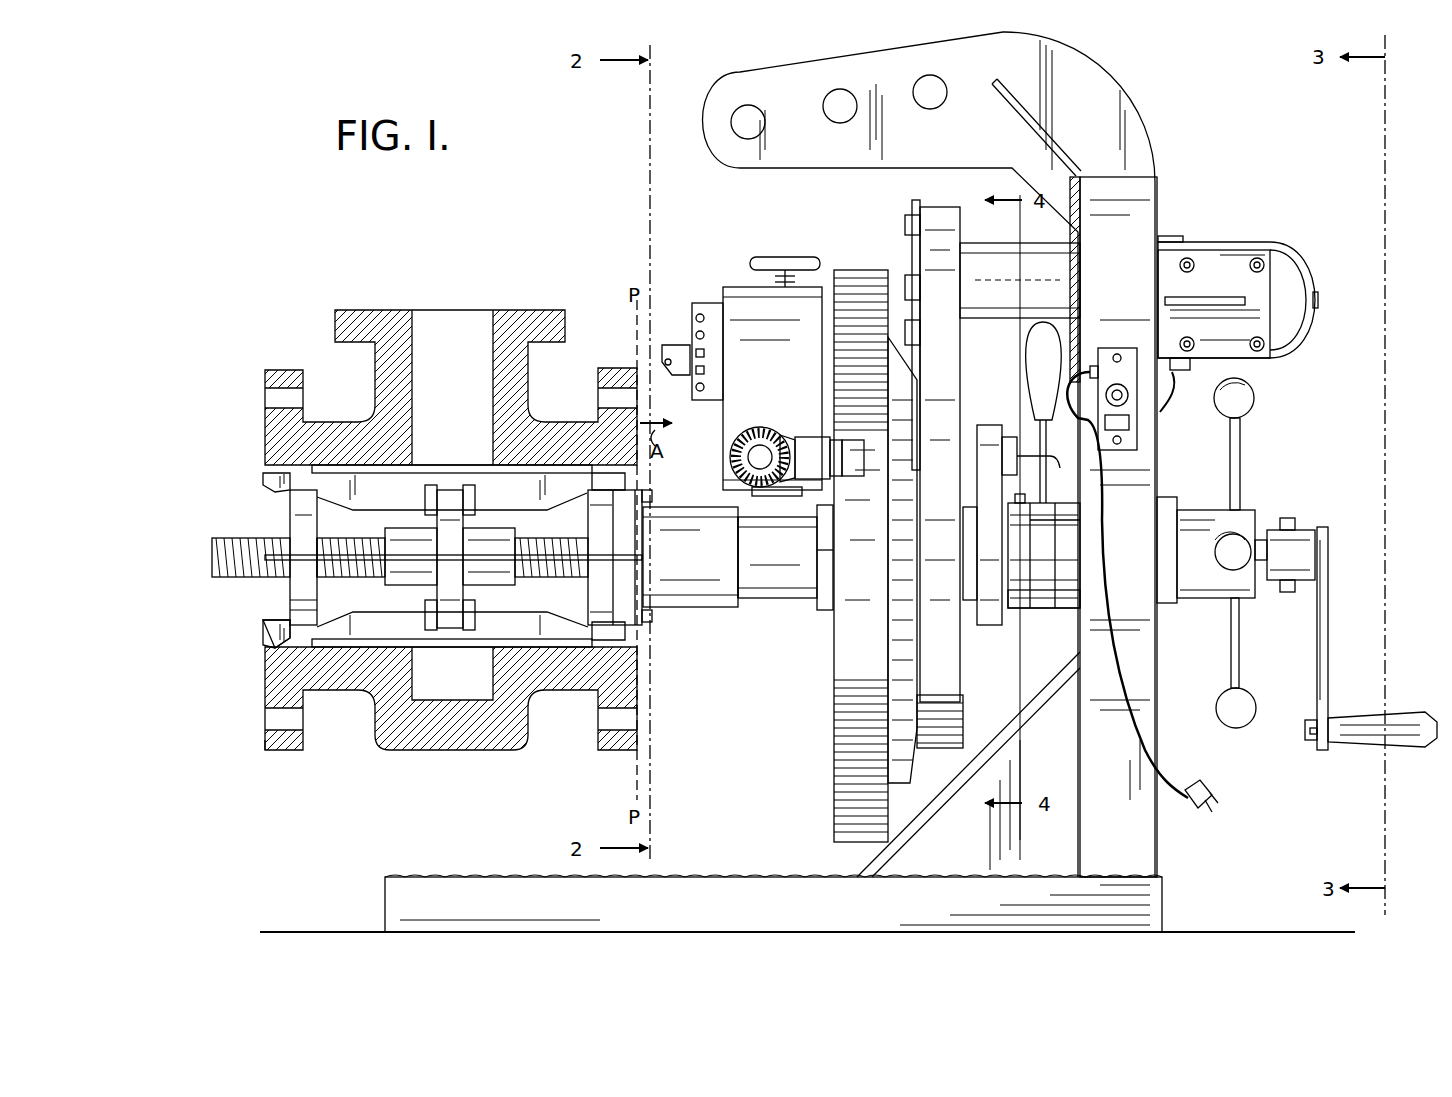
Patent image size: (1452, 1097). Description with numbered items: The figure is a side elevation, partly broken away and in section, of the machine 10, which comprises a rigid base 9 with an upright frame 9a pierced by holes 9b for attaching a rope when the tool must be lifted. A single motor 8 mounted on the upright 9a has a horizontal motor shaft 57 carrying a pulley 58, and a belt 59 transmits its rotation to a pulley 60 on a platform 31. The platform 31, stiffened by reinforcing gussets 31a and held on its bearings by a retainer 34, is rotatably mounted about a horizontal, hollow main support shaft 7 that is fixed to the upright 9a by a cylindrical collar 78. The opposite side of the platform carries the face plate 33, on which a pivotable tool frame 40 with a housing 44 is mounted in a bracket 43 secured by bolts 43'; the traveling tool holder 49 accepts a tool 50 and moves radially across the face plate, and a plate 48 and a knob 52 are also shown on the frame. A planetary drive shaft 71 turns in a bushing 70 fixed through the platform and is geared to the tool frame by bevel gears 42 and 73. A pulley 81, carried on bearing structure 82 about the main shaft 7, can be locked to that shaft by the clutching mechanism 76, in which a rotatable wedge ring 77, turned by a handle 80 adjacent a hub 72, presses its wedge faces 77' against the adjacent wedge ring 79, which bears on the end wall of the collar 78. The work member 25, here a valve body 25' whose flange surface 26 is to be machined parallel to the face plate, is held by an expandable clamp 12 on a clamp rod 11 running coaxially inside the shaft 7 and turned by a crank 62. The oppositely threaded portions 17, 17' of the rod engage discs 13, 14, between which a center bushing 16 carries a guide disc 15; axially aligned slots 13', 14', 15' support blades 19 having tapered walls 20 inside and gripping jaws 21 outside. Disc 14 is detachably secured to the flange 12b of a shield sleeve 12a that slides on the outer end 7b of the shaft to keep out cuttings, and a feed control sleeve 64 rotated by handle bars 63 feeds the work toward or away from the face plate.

The main support shaft 7 is at (777, 577).
The outer end of hollow shaft 7b is at (790, 606).
The motor 8 is at (1290, 255).
The stand or base 9 is at (1165, 890).
The upright frame 9a is at (1143, 192).
The holes 9b is at (840, 106).
The machine 10 is at (1175, 133).
The clamp rod 11 is at (240, 532).
The clamp 12 is at (205, 575).
The shield sleeve 12a is at (710, 607).
The flange 12b is at (630, 498).
The disc 13 is at (285, 557).
The longitudinal slot 13' is at (337, 544).
The disc 14 is at (591, 557).
The longitudinal slot 14' is at (477, 552).
The guide disc 15 is at (448, 532).
The longitudinal slot 15' is at (430, 554).
The center bushing 16 is at (490, 540).
The threaded portion 17 is at (300, 574).
The threaded portion 17' is at (551, 574).
The blade 19 is at (272, 482).
The tapered walls 20 is at (275, 625).
The gripping jaws 21 is at (310, 467).
The work member 25 is at (451, 363).
The valve body 25' is at (451, 721).
The flange surface 26 is at (640, 678).
The platform 31 is at (860, 268).
The reinforcing gussets 31a is at (900, 688).
The face plate 33 is at (834, 736).
The retainer 34 is at (827, 590).
The pivotable tool frame 40 is at (734, 288).
The bevel gear 42 is at (732, 458).
The bracket 43 is at (786, 437).
The bolts 43' is at (790, 427).
The housing 44 is at (770, 365).
The mounting plate 48 is at (702, 302).
The traveling tool holder 49 is at (678, 348).
The tool 50 is at (672, 376).
The adjusting knob 52 is at (778, 260).
The motor shaft 57 is at (910, 280).
The pulley 58 is at (908, 223).
The belt 59 is at (940, 212).
The pulley 60 is at (958, 722).
The crank 62 is at (1328, 668).
The handle bars 63 is at (1242, 435).
The feed control sleeve 64 is at (1238, 517).
The bushing 70 is at (890, 445).
The planetary drive shaft 71 is at (1047, 474).
The lever hub 72 is at (1013, 435).
The bevel gear 73 is at (772, 494).
The clutching mechanism 76 is at (1050, 553).
The rotatable wedge ring 77 is at (1081, 535).
The wedge faces 77' is at (1085, 503).
The cylindrical collar 78 is at (1165, 603).
The wedge ring 79 is at (1025, 595).
The handle 80 is at (1040, 340).
The pulley 81 is at (1005, 612).
The clutch disc 82 is at (980, 625).